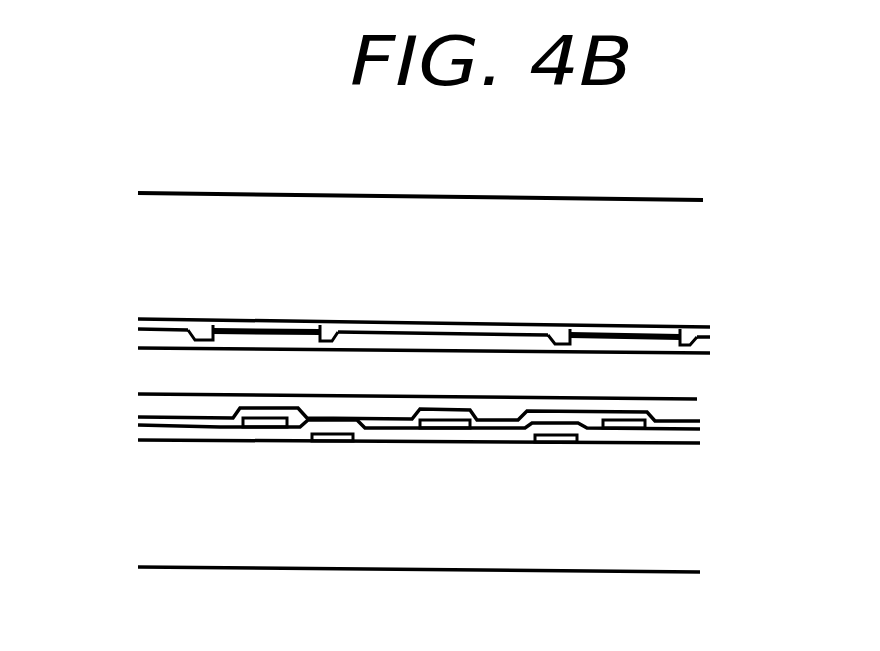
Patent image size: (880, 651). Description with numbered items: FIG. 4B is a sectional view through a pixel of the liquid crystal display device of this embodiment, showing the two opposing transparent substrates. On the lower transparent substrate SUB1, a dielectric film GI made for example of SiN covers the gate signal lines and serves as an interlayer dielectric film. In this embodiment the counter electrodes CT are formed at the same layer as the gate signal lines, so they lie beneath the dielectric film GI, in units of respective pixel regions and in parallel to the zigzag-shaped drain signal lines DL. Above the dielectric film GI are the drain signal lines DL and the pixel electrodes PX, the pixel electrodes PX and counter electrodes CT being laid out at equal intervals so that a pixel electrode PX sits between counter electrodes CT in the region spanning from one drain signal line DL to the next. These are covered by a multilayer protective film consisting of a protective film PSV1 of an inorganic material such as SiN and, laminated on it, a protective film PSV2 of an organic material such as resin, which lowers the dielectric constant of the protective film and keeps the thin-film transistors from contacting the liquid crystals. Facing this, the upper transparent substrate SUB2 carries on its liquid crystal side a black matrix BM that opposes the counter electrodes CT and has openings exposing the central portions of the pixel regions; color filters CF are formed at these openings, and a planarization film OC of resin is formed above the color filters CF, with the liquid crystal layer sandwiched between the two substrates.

The transparent substrate SUB1 is at (670, 513).
The transparent substrate SUB2 is at (665, 255).
The black matrix BM is at (265, 322).
The color filter CF is at (446, 322).
The planarization film OC is at (710, 343).
The protective film PSV1 is at (695, 427).
The protective film PSV2 is at (148, 407).
The dielectric film GI is at (142, 430).
The drain signal line DL is at (266, 428).
The pixel electrode PX is at (443, 428).
The counter electrode CT is at (330, 441).